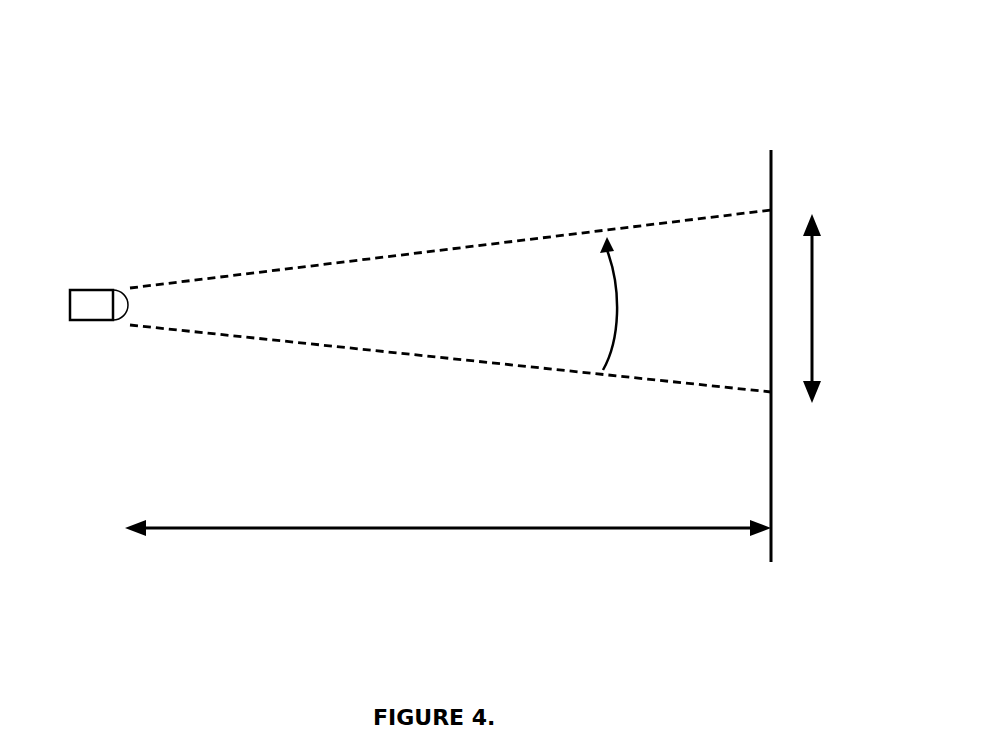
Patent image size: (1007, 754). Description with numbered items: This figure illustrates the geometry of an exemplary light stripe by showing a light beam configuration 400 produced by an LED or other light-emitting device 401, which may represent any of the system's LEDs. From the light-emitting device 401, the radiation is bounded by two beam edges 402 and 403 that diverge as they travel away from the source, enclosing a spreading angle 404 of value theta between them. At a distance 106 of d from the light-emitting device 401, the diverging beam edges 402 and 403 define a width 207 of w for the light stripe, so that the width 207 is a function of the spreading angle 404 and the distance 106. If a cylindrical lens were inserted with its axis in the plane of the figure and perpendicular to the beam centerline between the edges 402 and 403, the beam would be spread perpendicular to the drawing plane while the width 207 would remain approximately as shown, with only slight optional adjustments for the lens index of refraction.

The light beam configuration 400 is at (732, 88).
The light-emitting device 401 is at (100, 290).
The beam edge 402 is at (452, 246).
The beam edge 403 is at (442, 362).
The spreading angle 404 is at (611, 270).
The width 207 is at (835, 308).
The distance 106 is at (448, 543).